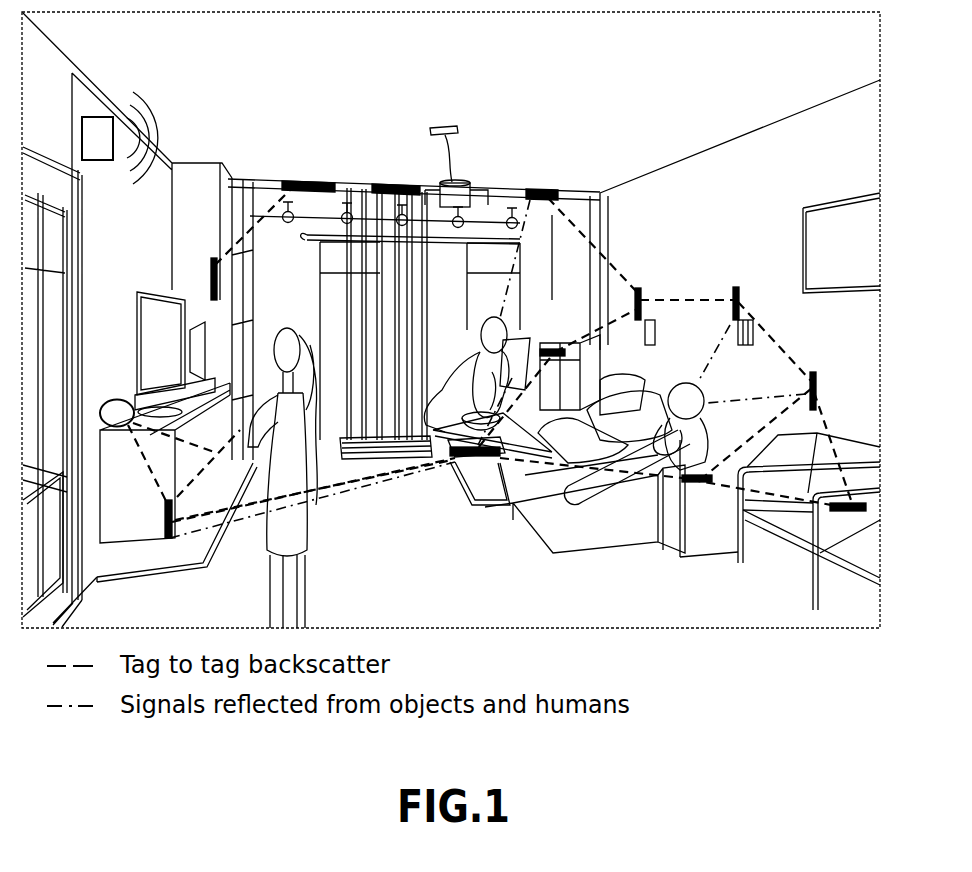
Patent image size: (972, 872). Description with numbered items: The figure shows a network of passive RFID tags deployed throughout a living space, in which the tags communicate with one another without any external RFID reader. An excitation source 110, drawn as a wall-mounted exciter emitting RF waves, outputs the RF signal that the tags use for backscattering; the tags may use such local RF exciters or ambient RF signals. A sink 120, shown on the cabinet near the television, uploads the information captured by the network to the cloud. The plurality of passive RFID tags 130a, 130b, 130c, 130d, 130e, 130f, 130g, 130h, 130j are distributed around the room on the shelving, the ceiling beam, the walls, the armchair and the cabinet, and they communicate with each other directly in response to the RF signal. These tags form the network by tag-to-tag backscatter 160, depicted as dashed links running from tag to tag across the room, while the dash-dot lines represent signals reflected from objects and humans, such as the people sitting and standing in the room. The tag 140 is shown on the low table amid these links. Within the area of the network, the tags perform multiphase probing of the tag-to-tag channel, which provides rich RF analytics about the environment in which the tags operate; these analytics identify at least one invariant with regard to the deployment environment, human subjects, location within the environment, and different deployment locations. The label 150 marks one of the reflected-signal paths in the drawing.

The excitation source 110 is at (97, 115).
The sink 120 is at (118, 398).
The passive RFID tag 130a is at (211, 268).
The passive RFID tag 130b is at (293, 180).
The passive RFID tag 130c is at (390, 182).
The passive RFID tag 130d is at (536, 191).
The passive RFID tag 130e is at (638, 288).
The passive RFID tag 130f is at (736, 287).
The passive RFID tag 130g is at (814, 380).
The passive RFID tag 130h is at (840, 512).
The passive RFID tag 130j is at (168, 535).
The RFID tag on table 140 is at (490, 460).
The signal reflected from objects and humans 150 is at (348, 522).
The tag-to-tag backscatter 160 is at (258, 506).